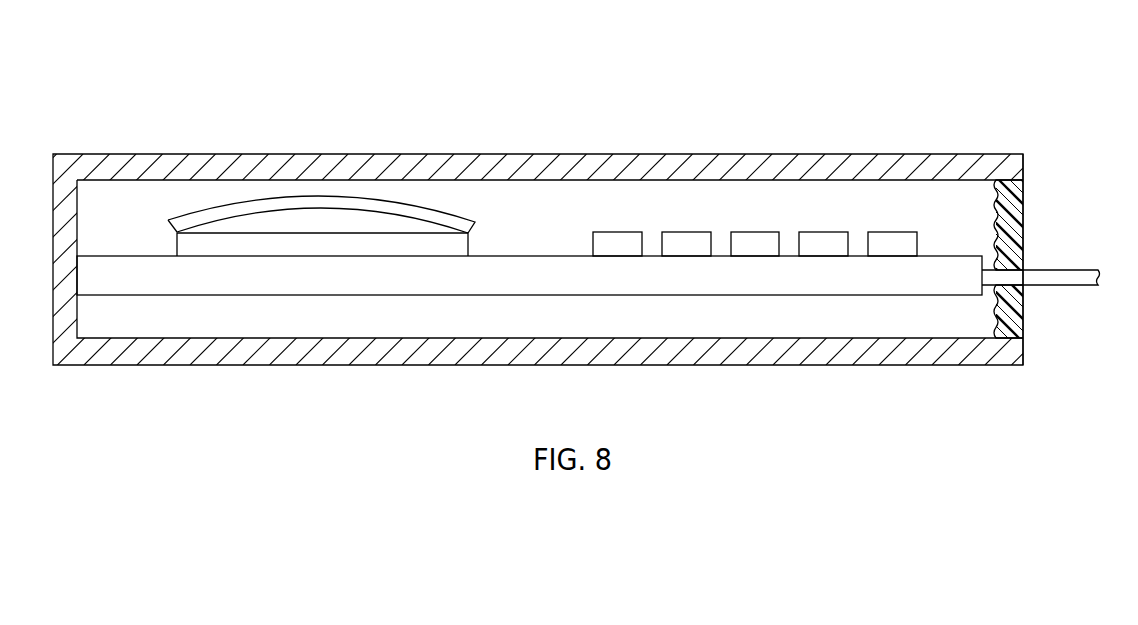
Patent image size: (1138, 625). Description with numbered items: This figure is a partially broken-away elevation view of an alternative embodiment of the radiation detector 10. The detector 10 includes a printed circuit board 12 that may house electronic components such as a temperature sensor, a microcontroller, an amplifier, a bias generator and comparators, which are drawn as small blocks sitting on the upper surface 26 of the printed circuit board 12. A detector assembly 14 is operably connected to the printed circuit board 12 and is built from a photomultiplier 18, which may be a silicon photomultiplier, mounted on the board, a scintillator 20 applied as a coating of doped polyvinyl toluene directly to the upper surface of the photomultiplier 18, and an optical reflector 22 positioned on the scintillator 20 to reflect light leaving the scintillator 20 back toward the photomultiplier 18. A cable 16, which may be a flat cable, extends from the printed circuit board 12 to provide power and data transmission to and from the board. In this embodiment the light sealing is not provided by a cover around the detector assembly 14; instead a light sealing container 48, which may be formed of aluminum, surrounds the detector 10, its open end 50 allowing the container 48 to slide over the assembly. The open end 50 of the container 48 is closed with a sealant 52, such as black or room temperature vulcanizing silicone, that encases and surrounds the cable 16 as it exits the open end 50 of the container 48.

The radiation detector 10 is at (820, 70).
The printed circuit board 12 is at (908, 287).
The detector assembly 14 is at (321, 161).
The cable 16 is at (1045, 273).
The photomultiplier 18 is at (440, 248).
The scintillator 20 is at (252, 225).
The optical reflector 22 is at (200, 213).
The upper surface 26 is at (538, 256).
The light sealing container 48 is at (910, 162).
The open end 50 is at (1023, 167).
The sealant 52 is at (1013, 220).